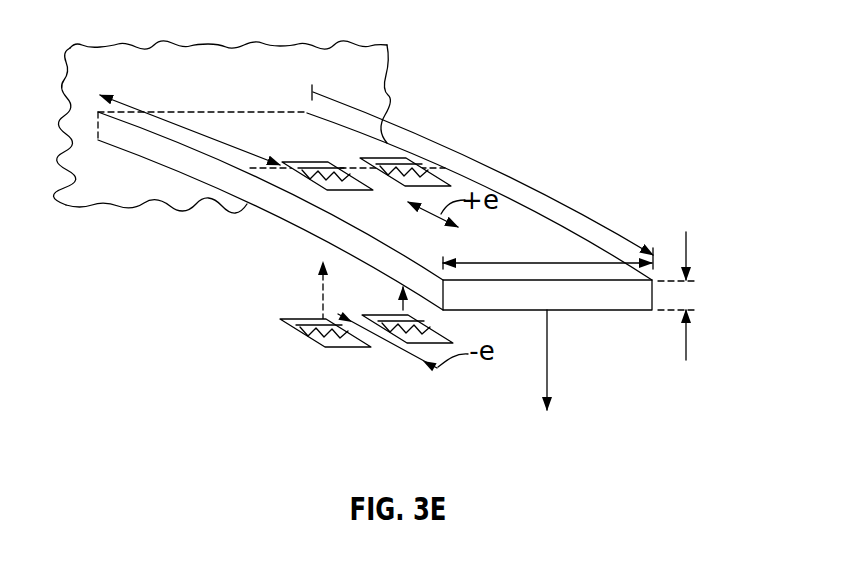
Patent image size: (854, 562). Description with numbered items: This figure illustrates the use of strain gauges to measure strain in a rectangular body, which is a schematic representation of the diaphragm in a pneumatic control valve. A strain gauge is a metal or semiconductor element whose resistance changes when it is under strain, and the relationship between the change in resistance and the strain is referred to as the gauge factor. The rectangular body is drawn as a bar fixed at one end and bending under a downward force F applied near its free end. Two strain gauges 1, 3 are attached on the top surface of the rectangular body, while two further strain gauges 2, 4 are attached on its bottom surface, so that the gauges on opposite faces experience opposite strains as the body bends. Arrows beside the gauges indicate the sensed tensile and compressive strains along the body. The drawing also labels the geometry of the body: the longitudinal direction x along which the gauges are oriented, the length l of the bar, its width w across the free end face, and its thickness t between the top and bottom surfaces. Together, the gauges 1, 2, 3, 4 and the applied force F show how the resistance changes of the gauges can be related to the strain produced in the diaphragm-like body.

The strain gauge 1 is at (308, 160).
The strain gauge 2 is at (292, 318).
The strain gauge 3 is at (403, 160).
The strain gauge 4 is at (367, 315).
The longitudinal axis / distance x is at (190, 126).
The beam length l is at (481, 157).
The beam width w is at (548, 262).
The beam thickness t is at (693, 248).
The applied force F is at (545, 377).